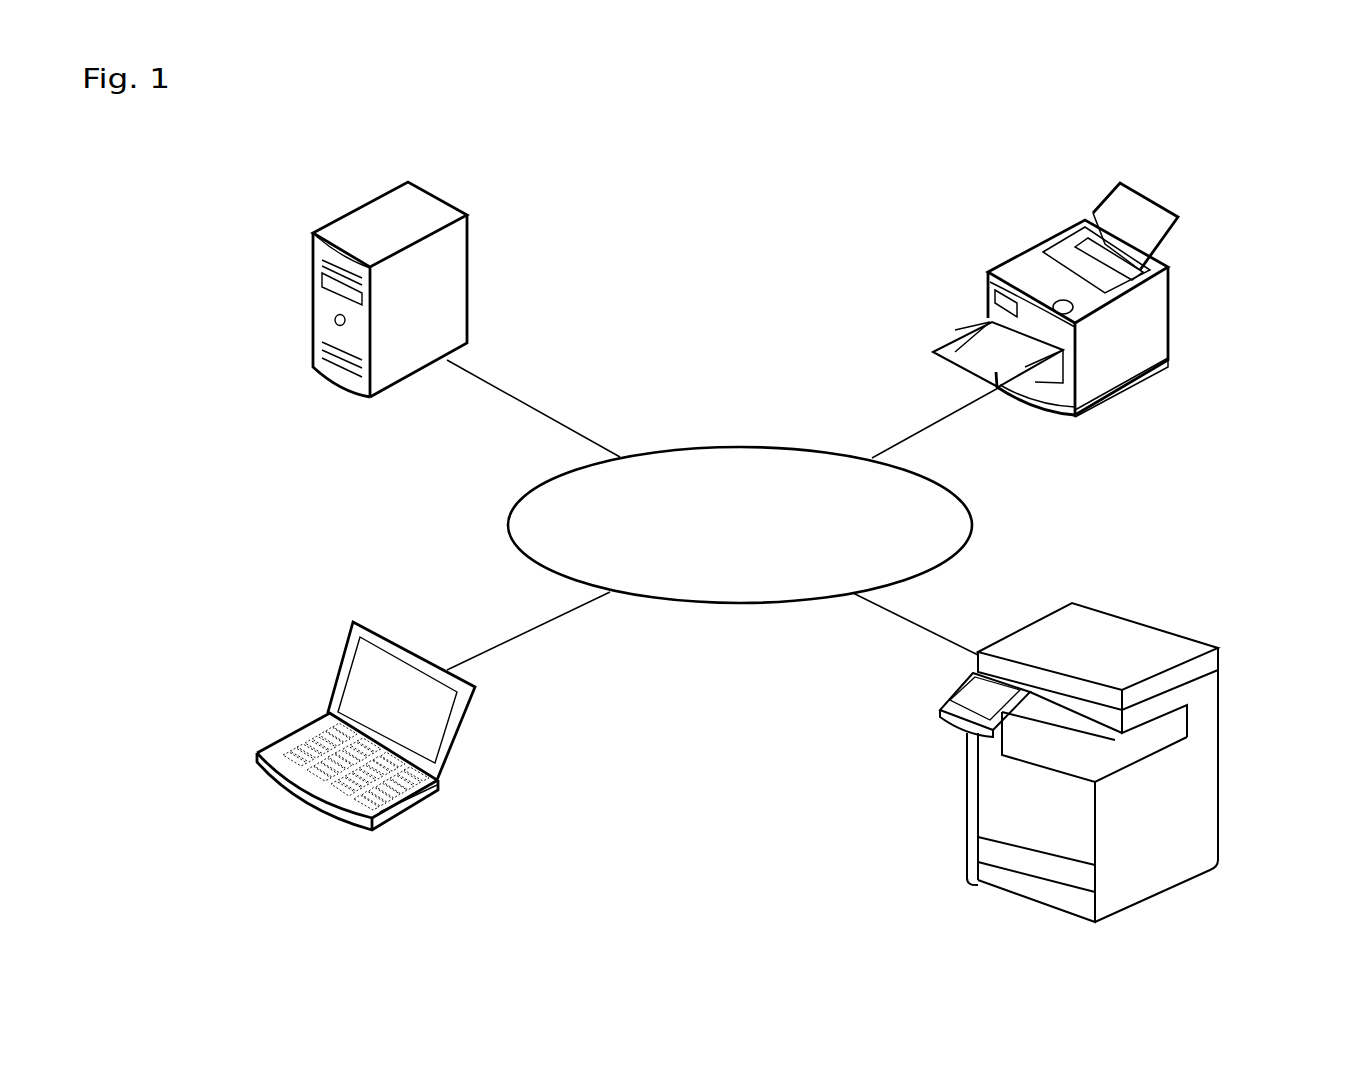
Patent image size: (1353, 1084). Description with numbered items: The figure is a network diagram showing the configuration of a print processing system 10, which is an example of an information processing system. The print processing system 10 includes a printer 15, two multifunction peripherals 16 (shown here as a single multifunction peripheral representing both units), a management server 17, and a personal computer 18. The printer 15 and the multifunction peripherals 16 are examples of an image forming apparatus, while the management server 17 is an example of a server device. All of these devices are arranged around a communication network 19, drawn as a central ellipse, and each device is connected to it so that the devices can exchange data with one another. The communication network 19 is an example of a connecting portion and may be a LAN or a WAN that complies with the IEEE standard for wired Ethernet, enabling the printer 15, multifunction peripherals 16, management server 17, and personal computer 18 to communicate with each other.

The print processing system 10 is at (690, 705).
The printer 15 is at (1033, 250).
The multifunction peripherals 16 is at (1187, 638).
The management server 17 is at (445, 197).
The personal computer 18 is at (387, 632).
The communication network 19 is at (695, 448).